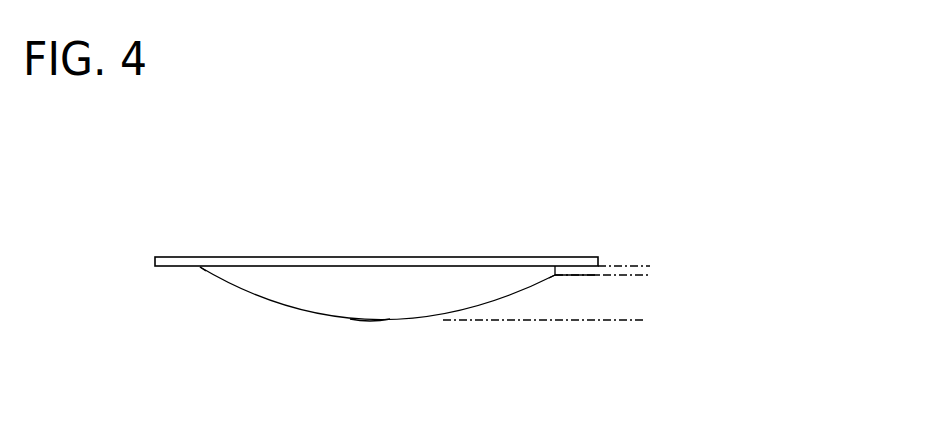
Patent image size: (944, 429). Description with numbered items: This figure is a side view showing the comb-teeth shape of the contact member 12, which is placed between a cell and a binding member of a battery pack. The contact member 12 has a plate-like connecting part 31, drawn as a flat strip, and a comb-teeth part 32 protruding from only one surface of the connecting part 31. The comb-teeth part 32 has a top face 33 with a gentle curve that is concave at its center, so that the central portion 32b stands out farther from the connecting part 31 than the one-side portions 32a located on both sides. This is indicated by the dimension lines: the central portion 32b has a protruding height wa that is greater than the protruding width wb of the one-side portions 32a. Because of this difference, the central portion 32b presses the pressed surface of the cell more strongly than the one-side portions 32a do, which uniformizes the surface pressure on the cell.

The contact member 12 is at (360, 274).
The connecting part 31 is at (167, 257).
The comb-teeth part 32 is at (360, 326).
The one-side portion 32a is at (217, 280).
The central portion 32b is at (372, 307).
The top face 33 is at (457, 317).
The protruding height wa is at (618, 266).
The protruding width wb is at (672, 243).